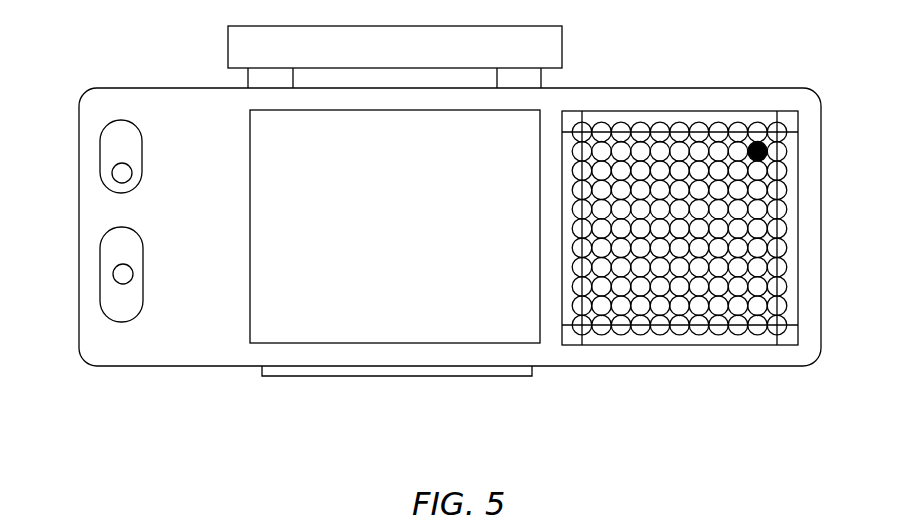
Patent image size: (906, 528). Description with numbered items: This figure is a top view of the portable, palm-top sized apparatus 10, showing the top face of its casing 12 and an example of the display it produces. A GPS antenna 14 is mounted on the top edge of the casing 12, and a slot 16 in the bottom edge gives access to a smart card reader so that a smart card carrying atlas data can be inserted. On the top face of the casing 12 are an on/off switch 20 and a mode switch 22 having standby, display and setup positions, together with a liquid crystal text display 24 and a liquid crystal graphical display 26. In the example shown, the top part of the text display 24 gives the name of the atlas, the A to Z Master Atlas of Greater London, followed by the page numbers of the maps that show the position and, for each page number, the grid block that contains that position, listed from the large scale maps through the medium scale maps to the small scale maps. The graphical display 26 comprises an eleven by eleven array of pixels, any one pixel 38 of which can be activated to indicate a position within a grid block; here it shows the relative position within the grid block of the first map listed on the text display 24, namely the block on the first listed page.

The apparatus 10 is at (563, 409).
The casing 12 is at (735, 367).
The GPS antenna 14 is at (562, 48).
The slot 16 is at (350, 376).
The on/off switch 20 is at (100, 160).
The mode switch 22 is at (100, 263).
The liquid crystal text display 24 is at (435, 343).
The liquid crystal graphical display 26 is at (627, 345).
The pixel 38 is at (762, 148).